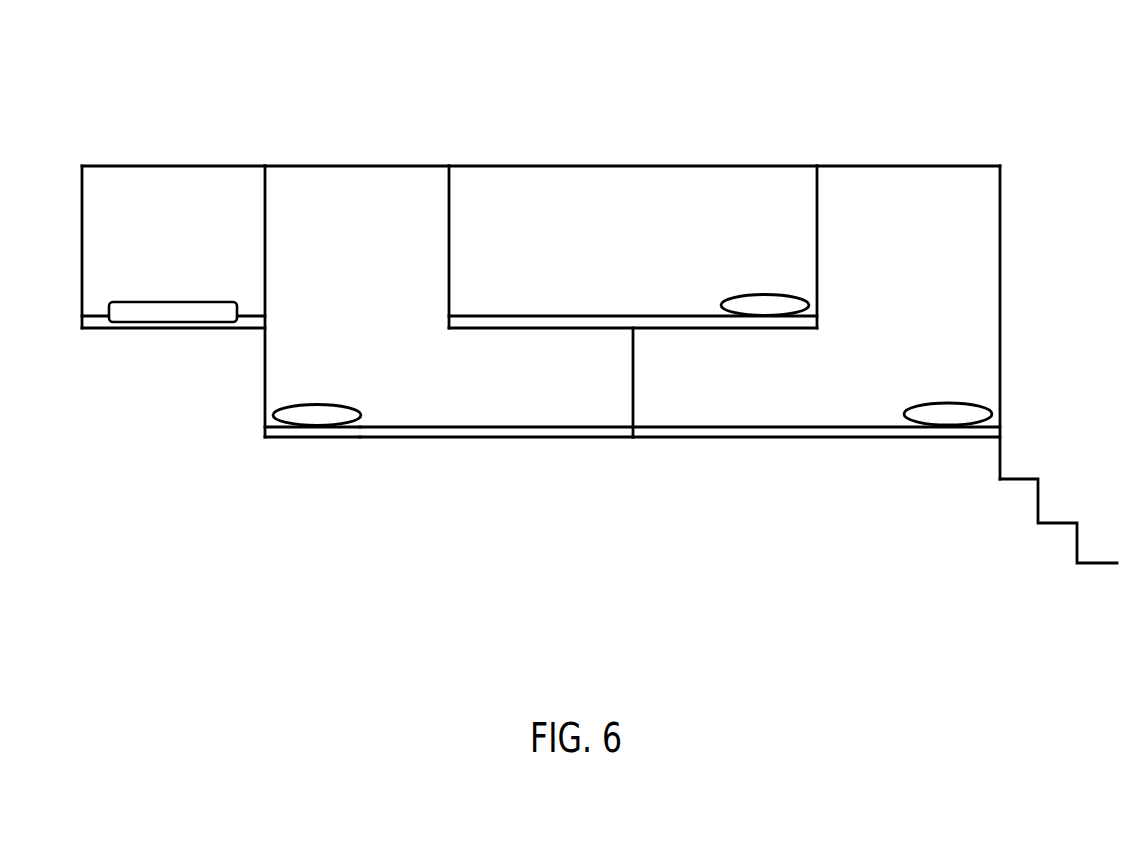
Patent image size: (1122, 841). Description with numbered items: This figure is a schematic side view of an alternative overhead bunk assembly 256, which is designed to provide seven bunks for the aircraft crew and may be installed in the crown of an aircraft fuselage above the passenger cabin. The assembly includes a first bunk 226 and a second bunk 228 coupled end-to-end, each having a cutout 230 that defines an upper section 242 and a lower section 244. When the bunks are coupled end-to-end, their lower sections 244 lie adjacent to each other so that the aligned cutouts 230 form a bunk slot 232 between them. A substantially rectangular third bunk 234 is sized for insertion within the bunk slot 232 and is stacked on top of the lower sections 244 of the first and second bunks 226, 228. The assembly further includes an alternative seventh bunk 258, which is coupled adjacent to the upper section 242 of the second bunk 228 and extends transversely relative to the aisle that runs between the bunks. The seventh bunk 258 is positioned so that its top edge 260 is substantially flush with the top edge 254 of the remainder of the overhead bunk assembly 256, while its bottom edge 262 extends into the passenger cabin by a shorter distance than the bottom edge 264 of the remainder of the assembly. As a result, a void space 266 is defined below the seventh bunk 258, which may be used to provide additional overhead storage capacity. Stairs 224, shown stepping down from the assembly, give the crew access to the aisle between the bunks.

The stairs 224 is at (1040, 490).
The first bunk 226 is at (800, 438).
The second bunk 228 is at (433, 438).
The cutout 230 is at (520, 338).
The bunk slot 232 is at (804, 140).
The third bunk 234 is at (682, 166).
The upper section 242 is at (377, 245).
The lower section 244 is at (563, 398).
The top edge 254 is at (353, 166).
The overhead bunk assembly 256 is at (894, 62).
The seventh bunk 258 is at (132, 166).
The top edge 260 is at (220, 166).
The bottom edge 262 is at (103, 330).
The bottom edge 264 is at (308, 442).
The void space 266 is at (190, 397).